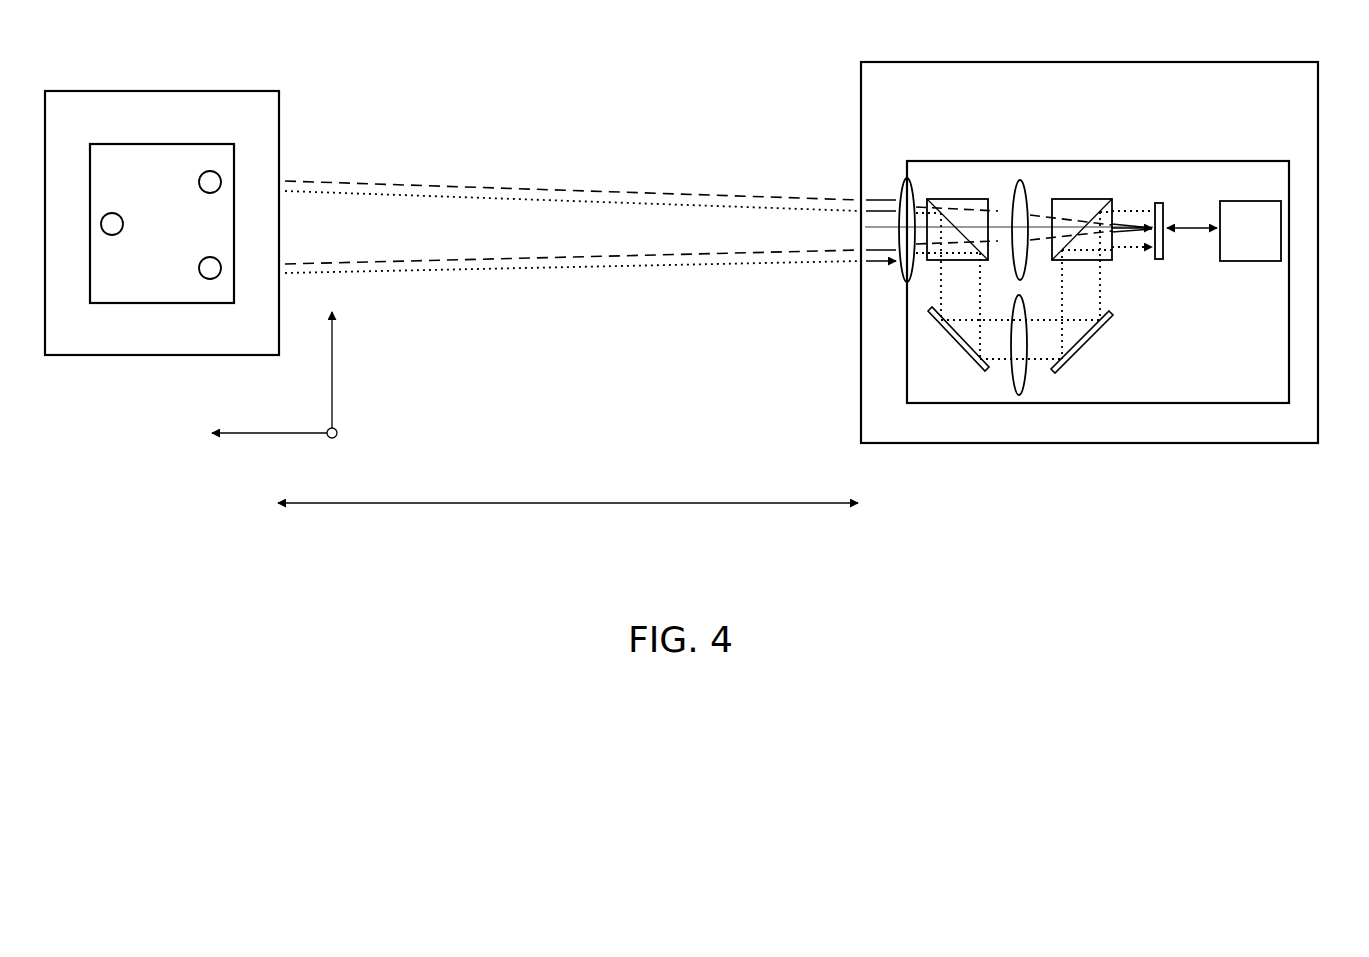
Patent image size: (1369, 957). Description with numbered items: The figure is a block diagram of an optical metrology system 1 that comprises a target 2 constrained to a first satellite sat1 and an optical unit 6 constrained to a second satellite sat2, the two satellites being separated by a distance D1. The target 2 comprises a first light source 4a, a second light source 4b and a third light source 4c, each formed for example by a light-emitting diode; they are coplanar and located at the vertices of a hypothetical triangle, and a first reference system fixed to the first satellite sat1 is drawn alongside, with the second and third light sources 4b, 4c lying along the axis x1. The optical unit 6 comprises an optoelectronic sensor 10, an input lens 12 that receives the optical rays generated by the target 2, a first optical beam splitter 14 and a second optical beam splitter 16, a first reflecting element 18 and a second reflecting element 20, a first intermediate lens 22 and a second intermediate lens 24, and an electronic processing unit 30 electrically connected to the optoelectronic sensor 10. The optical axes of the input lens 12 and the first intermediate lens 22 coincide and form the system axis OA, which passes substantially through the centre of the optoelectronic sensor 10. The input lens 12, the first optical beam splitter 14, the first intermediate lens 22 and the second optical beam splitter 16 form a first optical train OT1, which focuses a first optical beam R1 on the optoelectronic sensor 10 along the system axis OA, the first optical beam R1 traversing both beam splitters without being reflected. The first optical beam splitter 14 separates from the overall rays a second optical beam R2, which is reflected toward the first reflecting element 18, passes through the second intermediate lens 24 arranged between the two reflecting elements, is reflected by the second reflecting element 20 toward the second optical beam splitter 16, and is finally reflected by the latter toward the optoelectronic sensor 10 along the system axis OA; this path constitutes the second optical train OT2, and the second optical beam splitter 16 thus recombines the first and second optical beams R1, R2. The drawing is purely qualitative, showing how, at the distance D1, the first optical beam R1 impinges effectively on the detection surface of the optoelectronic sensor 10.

The metrology system 1 is at (766, 111).
The target 2 is at (107, 260).
The first light source 4a is at (112, 222).
The second light source 4b is at (214, 272).
The third light source 4c is at (210, 180).
The optical unit 6 is at (1245, 147).
The optoelectronic sensor 10 is at (1161, 256).
The input lens 12 is at (905, 190).
The first optical beam splitter 14 is at (960, 213).
The second optical beam splitter 16 is at (1067, 210).
The first reflecting element 18 is at (948, 338).
The second reflecting element 20 is at (1088, 337).
The first intermediate lens 22 is at (1022, 183).
The second intermediate lens 24 is at (1020, 372).
The electronic processing unit 30 is at (1245, 254).
The first satellite sat1 is at (235, 108).
The second satellite sat2 is at (880, 74).
The system axis OA is at (1033, 215).
The first optical train OT1 is at (1135, 194).
The second optical train OT2 is at (928, 282).
The first optical beam R1 is at (350, 263).
The second optical beam R2 is at (465, 200).
The distance D1 is at (568, 488).
The axis x1 is at (280, 375).